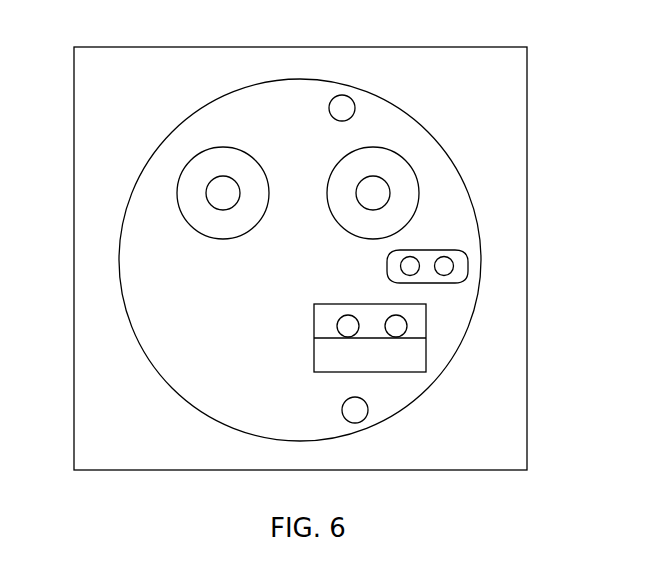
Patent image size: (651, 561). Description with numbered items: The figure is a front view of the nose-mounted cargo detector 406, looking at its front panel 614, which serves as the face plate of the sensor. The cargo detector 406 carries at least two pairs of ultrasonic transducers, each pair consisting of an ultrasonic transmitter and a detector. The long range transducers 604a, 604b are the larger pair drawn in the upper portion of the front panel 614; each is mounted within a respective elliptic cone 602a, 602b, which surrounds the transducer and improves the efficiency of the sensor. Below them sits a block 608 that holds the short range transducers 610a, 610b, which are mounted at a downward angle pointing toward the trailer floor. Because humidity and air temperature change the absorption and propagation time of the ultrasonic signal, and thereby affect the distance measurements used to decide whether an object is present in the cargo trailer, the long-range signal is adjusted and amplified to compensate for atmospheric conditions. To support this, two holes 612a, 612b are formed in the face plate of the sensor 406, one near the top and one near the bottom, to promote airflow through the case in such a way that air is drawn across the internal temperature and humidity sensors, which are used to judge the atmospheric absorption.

The cargo detector 406 is at (132, 457).
The front panel 614 is at (233, 364).
The elliptic cone 602a is at (228, 240).
The long range ultrasonic transducer 604a is at (208, 202).
The elliptic cone 602b is at (343, 158).
The long range ultrasonic transducer 604b is at (357, 200).
The hole 612a is at (329, 108).
The hole 612b is at (342, 410).
The connector block 608 is at (314, 320).
The short range ultrasonic transducer 610a is at (348, 315).
The short range ultrasonic transducer 610b is at (394, 315).